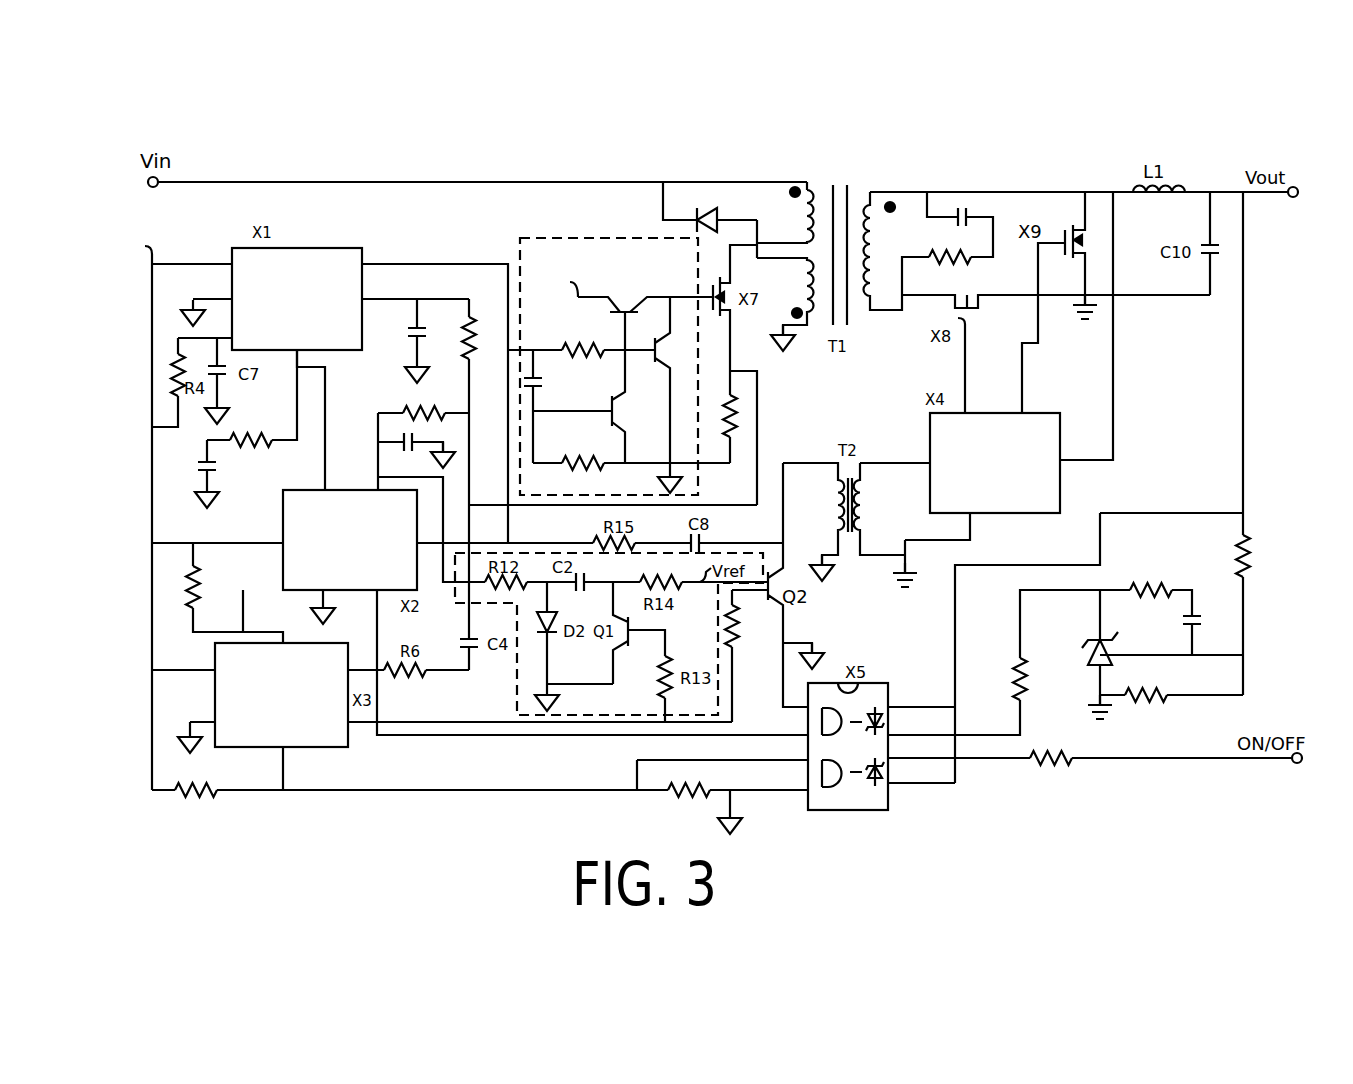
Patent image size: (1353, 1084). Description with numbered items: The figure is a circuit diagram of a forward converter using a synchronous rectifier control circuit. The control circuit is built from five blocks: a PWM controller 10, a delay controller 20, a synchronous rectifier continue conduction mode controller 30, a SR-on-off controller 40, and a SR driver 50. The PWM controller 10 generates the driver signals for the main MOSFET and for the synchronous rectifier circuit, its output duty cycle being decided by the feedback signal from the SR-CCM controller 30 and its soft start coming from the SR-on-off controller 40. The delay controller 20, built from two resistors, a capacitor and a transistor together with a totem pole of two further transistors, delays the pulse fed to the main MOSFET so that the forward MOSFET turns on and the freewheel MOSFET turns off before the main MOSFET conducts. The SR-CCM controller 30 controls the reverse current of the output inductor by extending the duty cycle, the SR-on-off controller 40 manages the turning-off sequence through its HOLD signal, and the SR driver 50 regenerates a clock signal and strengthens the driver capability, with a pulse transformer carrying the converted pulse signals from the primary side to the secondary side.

The PWM controller 10 is at (302, 248).
The delay controller 20 is at (530, 258).
The synchronous rectifier continue conduction mode controller 30 is at (307, 513).
The SR-on-off controller 40 is at (318, 747).
The SR driver 50 is at (1062, 437).